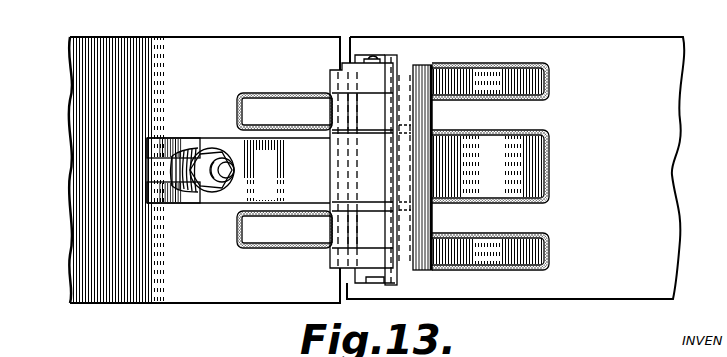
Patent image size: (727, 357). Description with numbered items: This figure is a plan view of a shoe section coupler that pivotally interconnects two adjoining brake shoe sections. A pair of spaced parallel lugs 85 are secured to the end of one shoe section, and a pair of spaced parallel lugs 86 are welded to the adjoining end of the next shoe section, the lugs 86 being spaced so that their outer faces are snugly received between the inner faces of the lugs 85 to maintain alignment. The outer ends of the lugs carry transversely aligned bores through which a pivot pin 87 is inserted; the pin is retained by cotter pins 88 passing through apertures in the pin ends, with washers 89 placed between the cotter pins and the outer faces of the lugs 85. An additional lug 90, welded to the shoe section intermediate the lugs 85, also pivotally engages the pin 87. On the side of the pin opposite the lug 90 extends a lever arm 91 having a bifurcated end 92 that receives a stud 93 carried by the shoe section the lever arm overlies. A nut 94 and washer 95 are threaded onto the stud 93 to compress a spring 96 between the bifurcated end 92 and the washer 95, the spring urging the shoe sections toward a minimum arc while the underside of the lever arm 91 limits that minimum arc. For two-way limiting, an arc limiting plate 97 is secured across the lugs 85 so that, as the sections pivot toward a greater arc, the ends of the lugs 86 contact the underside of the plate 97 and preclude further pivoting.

The lugs 85 is at (486, 78).
The lugs 86 is at (266, 108).
The pivot pin 87 is at (392, 58).
The cotter pins 88 is at (372, 57).
The washers 89 is at (342, 65).
The additional lug 90 is at (484, 145).
The lever arm 91 is at (231, 195).
The bifurcated end 92 is at (160, 192).
The stud 93 is at (214, 190).
The nut 94 is at (195, 188).
The washer 95 is at (212, 149).
The spring 96 is at (171, 165).
The arc limiting plate 97 is at (416, 80).